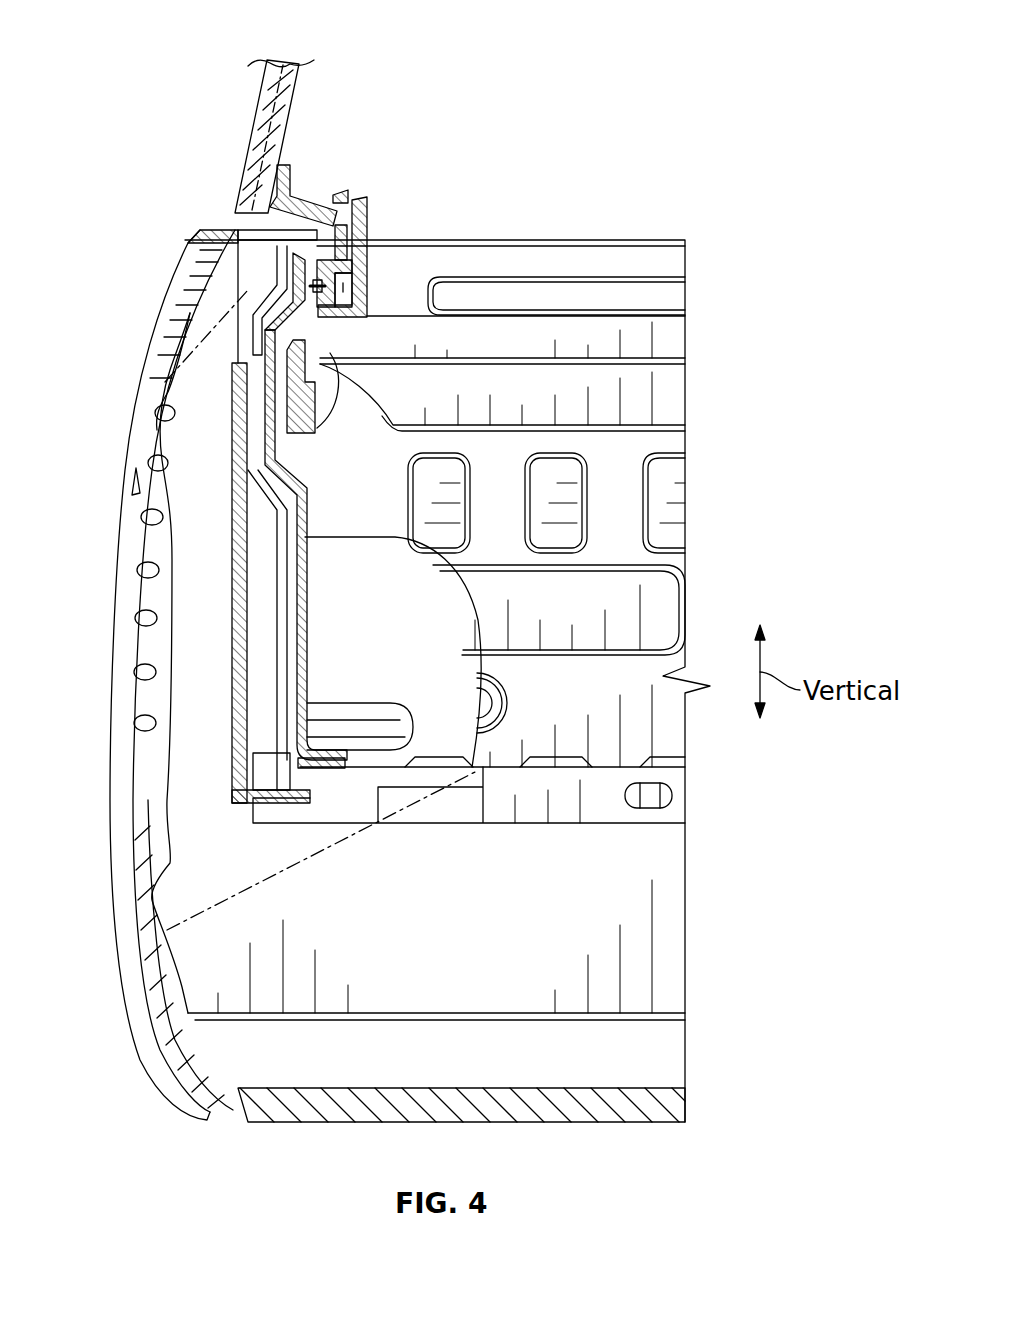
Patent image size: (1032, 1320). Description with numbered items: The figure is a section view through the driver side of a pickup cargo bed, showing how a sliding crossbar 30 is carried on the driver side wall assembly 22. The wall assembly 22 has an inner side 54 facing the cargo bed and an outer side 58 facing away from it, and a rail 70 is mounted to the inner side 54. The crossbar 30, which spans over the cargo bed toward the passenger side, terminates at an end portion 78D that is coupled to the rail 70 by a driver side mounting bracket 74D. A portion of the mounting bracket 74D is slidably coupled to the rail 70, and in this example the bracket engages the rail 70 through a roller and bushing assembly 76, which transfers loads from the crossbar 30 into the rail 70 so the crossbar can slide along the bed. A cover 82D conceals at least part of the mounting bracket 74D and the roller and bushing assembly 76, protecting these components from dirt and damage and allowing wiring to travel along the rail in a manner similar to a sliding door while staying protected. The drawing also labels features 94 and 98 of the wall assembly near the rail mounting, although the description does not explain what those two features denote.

The end portion of the crossbar 78D is at (334, 57).
The crossbar 30 is at (289, 107).
The driver side mounting bracket 74D is at (297, 202).
The rail 70 is at (312, 286).
The cover 82D is at (368, 235).
The roller and bushing assembly 76 is at (312, 286).
The driver side wall assembly 22 is at (216, 232).
The outer side 58 is at (130, 316).
The inner liner frame 98 is at (230, 387).
The inner side 54 is at (314, 433).
The support block 94 is at (308, 475).